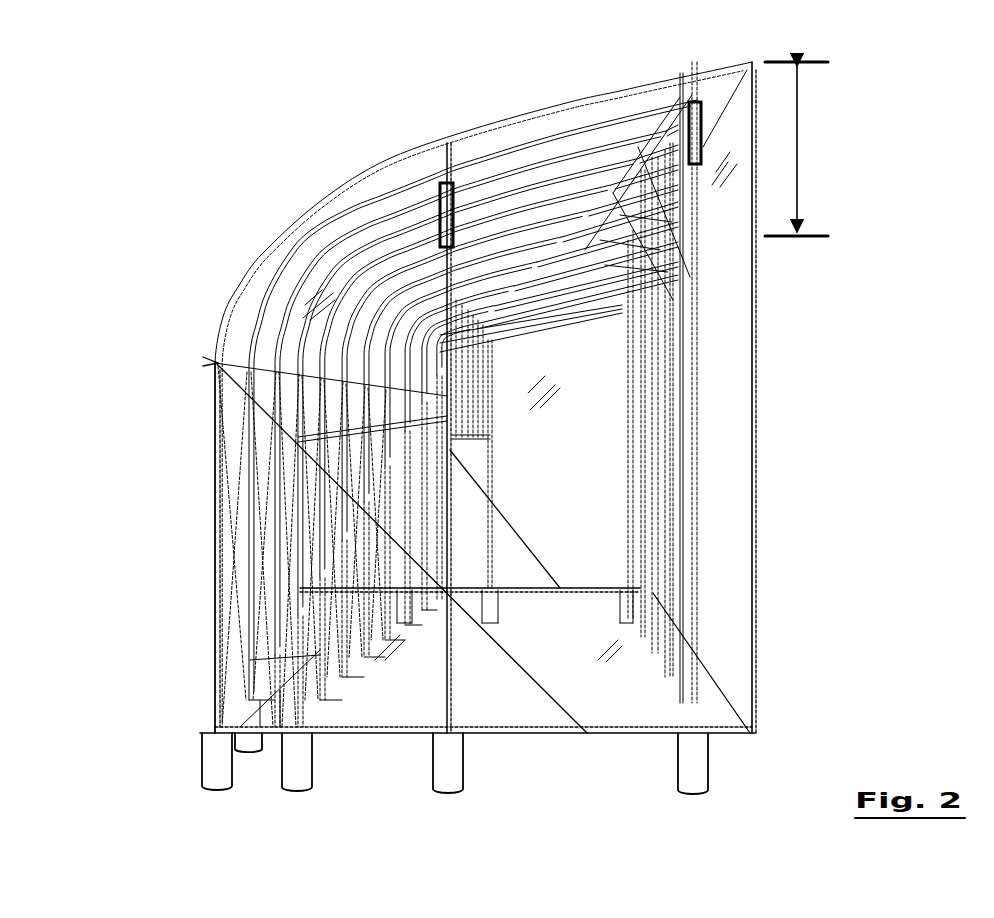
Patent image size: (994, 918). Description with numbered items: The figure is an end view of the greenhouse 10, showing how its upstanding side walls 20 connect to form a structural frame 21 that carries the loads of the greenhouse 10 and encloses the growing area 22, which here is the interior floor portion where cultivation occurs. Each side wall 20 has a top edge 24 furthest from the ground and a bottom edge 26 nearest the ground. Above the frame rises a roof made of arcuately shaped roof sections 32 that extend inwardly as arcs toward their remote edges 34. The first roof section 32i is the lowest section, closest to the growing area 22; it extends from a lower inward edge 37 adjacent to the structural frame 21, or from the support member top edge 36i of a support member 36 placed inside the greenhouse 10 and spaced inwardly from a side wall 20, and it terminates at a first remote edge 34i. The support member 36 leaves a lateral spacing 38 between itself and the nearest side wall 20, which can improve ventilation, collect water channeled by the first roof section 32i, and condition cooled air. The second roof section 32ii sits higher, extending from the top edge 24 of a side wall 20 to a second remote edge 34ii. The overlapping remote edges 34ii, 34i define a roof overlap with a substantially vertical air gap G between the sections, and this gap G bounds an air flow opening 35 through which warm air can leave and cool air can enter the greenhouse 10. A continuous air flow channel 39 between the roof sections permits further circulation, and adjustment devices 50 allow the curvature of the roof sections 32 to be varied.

The greenhouse 10 is at (150, 119).
The side wall 20 is at (214, 674).
The structural frame 21 is at (190, 605).
The growing area 22 is at (596, 671).
The top edge 24 is at (215, 365).
The bottom edge 26 is at (541, 737).
The roof section 32 is at (483, 396).
The first roof section 32i is at (560, 257).
The second roof section 32ii is at (383, 160).
The remote edge 34 is at (716, 381).
The first remote edge 34i is at (655, 290).
The second remote edge 34ii is at (752, 62).
The air flow opening 35 is at (690, 208).
The support member 36 is at (298, 527).
The support member top edge 36i is at (347, 428).
The inward edge 37 is at (298, 437).
The spacing 38 is at (250, 692).
The continuous air flow channel 39 is at (390, 257).
The adjustment device 50 is at (443, 182).
The vertical air gap G is at (796, 149).